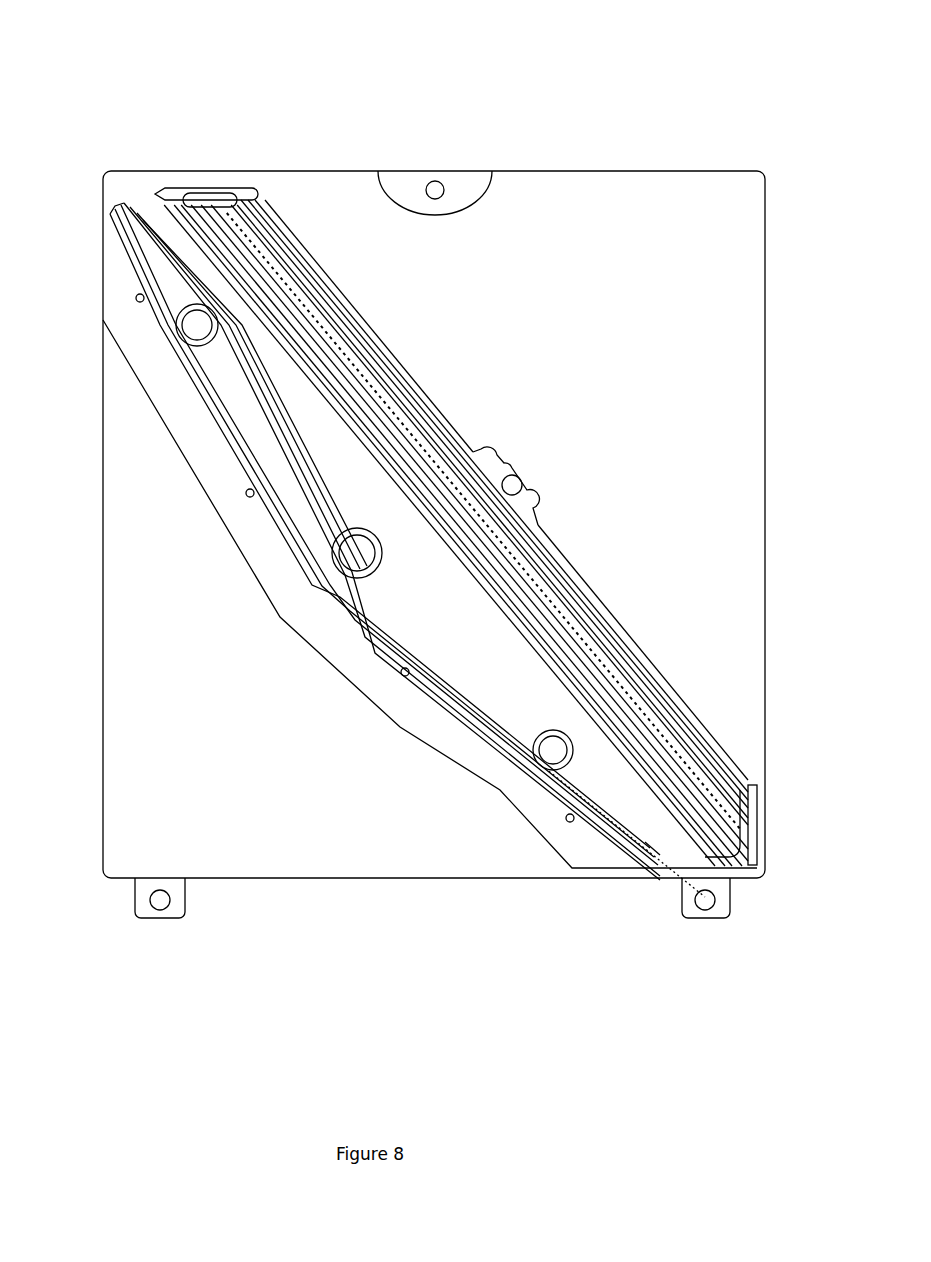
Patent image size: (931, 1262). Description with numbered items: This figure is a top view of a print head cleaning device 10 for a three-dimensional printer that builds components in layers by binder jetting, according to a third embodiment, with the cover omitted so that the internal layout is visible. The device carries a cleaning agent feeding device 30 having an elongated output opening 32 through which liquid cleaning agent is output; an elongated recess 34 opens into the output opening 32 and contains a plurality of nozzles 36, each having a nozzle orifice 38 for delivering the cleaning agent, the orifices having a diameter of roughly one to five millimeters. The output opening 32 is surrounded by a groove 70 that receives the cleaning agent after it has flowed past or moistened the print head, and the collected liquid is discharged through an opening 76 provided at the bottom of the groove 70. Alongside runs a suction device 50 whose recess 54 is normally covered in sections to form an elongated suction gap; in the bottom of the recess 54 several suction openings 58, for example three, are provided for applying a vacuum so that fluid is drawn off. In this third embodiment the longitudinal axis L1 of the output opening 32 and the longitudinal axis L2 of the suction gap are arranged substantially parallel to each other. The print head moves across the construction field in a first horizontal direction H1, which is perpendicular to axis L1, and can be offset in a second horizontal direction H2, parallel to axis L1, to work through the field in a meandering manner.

The print head cleaning device 10 is at (236, 82).
The cleaning agent feeding device 30 is at (663, 715).
The elongated output opening 32 is at (635, 690).
The elongated recess 34 is at (617, 663).
The nozzles 36 is at (562, 613).
The nozzle orifice 38 is at (548, 595).
The suction device 50 is at (283, 450).
The recess 54 is at (313, 505).
The suction openings 58 is at (197, 330).
The groove 70 is at (723, 763).
The opening 76 is at (515, 482).
The longitudinal axis of the elongated output opening L1 is at (205, 187).
The longitudinal axis of the elongated suction gap L2 is at (118, 205).
The first horizontal direction H1 is at (705, 1042).
The second horizontal direction H2 is at (755, 934).